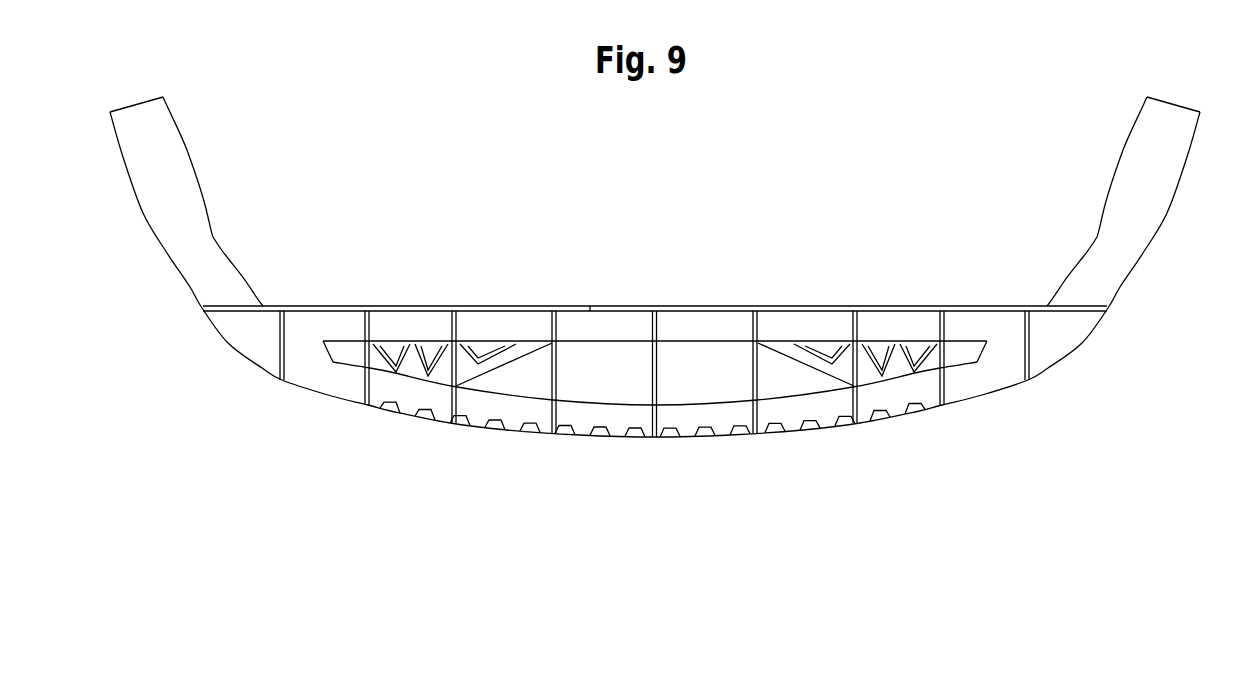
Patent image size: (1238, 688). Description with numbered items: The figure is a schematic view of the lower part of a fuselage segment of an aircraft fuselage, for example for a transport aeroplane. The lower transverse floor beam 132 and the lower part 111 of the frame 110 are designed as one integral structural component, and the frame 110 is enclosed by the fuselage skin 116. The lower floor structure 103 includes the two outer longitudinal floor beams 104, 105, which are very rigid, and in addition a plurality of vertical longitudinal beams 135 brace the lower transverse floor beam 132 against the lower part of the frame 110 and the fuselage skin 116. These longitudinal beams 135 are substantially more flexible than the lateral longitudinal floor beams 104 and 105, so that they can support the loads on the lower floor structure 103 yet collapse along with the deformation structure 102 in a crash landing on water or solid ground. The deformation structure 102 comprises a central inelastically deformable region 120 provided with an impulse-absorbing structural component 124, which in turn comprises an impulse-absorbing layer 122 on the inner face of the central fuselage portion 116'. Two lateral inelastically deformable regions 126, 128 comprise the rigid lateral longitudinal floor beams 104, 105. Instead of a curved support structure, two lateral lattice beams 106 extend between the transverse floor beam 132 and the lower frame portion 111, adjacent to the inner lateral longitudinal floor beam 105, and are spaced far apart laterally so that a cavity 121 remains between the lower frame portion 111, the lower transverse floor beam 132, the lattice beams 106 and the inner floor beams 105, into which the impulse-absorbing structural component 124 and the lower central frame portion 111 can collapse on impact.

The deformation structure 102 is at (817, 485).
The lower floor structure 103 is at (789, 288).
The outer longitudinal floor beam 104 is at (281, 360).
The inner lateral longitudinal floor beam 105 is at (364, 384).
The lateral lattice beam 106 is at (423, 333).
The frame 110 is at (168, 170).
The lower part of the frame 111 is at (610, 419).
The fuselage skin 116 is at (1123, 232).
The central fuselage portion 116' is at (655, 407).
The central inelastically deformable region 120 is at (592, 475).
The cavity 121 is at (700, 358).
The impulse-absorbing layer 122 is at (880, 401).
The impulse-absorbing structural component 124 is at (481, 440).
The lateral inelastically deformable region 126 is at (278, 418).
The lateral inelastically deformable region 128 is at (1031, 413).
The lower transverse floor beam 132 is at (607, 323).
The vertical longitudinal beam 135 is at (853, 380).